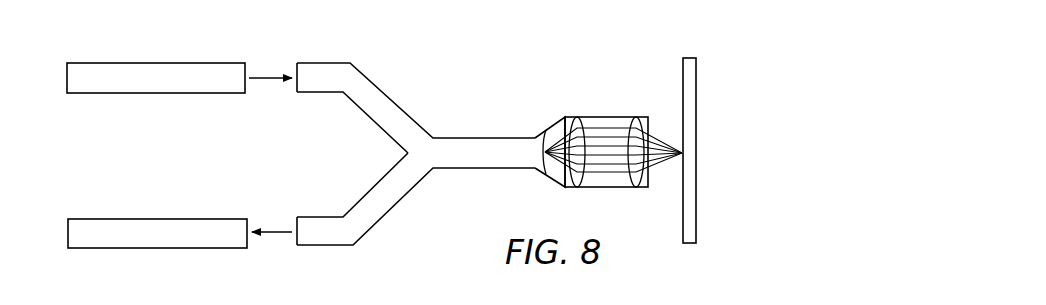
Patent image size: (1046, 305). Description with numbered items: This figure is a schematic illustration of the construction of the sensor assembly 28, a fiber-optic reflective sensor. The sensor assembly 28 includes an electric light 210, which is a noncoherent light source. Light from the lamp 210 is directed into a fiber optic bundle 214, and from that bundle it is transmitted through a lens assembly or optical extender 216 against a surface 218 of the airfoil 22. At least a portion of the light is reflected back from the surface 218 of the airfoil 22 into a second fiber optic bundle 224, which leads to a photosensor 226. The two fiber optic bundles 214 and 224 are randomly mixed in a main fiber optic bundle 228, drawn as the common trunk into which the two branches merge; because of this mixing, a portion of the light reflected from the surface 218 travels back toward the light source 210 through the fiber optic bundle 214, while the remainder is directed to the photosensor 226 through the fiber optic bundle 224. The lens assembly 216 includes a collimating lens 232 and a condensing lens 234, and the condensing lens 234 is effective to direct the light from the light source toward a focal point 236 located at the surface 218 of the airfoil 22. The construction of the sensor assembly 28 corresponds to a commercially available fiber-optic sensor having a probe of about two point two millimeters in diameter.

The electric light 210 is at (222, 62).
The photosensor 226 is at (187, 218).
The fiber optic bundle 214 is at (383, 110).
The fiber optic bundle 224 is at (378, 212).
The main fiber optic bundle 228 is at (462, 158).
The sensor assembly 28 is at (509, 78).
The lens assembly 216 is at (608, 158).
The collimating lens 232 is at (592, 88).
The condensing lens 234 is at (633, 177).
The airfoil 22 is at (695, 77).
The surface 218 is at (681, 120).
The focal point 236 is at (677, 160).